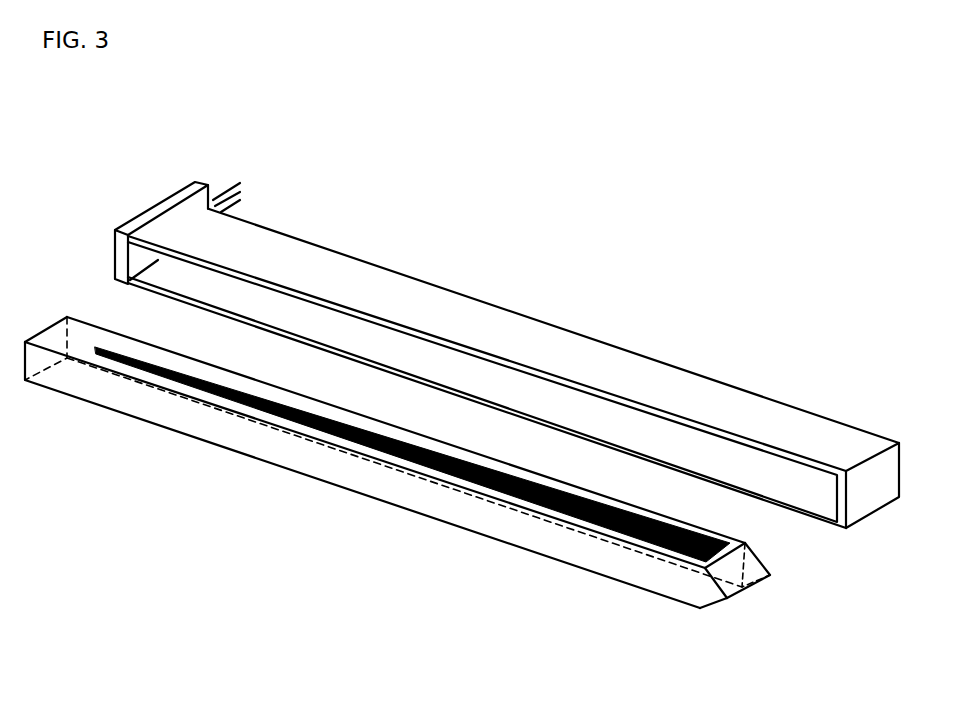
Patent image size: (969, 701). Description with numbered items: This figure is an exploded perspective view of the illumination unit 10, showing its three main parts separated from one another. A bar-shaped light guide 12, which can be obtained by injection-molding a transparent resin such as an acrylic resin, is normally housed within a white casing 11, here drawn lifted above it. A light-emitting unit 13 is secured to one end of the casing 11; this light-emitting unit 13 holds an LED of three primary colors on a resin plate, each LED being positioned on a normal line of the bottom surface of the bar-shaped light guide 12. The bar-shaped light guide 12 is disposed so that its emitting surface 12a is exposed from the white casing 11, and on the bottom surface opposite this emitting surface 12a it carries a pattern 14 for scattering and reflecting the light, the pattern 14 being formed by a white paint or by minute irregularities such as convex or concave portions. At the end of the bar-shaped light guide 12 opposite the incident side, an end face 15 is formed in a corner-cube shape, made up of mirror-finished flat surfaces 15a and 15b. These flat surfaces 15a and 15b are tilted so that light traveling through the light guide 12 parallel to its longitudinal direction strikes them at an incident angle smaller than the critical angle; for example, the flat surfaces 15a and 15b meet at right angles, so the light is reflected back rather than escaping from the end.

The illumination unit 10 is at (452, 287).
The white casing 11 is at (632, 372).
The bar-shaped light guide 12 is at (288, 456).
The emitting surface 12a is at (427, 500).
The light-emitting unit 13 is at (135, 220).
The pattern 14 is at (522, 483).
The end face 15 is at (771, 576).
The flat surface 15a is at (760, 563).
The flat surface 15b is at (727, 600).